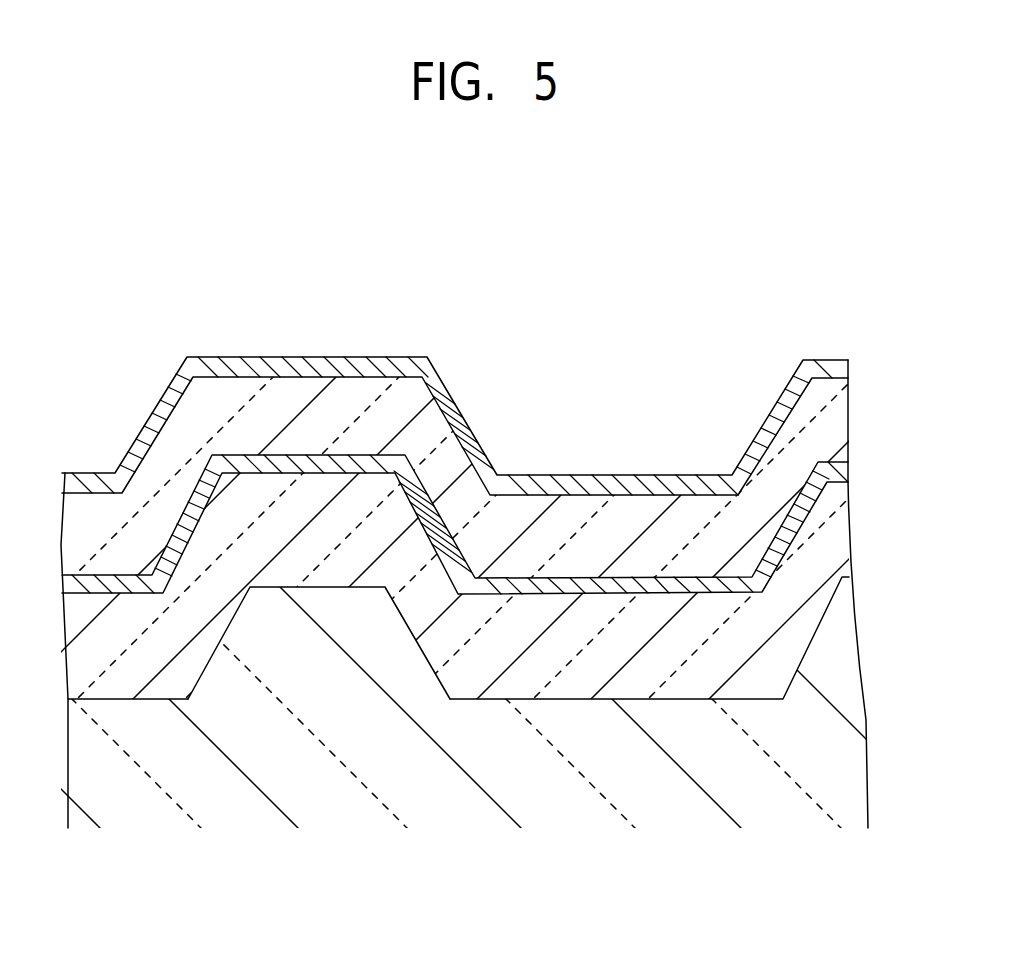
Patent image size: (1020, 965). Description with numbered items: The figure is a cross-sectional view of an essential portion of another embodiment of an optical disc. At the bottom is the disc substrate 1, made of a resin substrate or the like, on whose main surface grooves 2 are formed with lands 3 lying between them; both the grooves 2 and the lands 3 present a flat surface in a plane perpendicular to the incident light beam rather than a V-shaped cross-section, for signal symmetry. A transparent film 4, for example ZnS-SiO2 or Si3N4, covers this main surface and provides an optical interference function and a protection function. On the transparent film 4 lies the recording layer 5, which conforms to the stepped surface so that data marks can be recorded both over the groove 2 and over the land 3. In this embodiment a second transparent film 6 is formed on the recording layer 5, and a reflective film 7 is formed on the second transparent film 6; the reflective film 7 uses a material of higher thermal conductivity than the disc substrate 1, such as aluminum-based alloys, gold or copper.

The disc substrate 1 is at (867, 690).
The grooves 2 is at (570, 699).
The lands 3 is at (290, 590).
The transparent film 4 is at (850, 522).
The recording layer 5 is at (848, 468).
The second transparent film 6 is at (850, 408).
The reflective film 7 is at (852, 362).